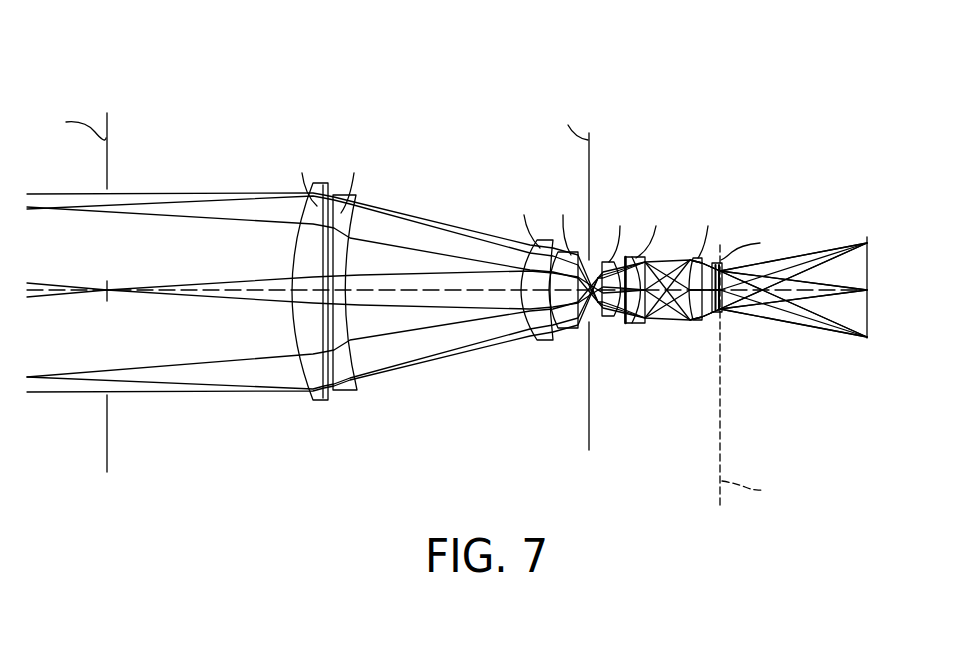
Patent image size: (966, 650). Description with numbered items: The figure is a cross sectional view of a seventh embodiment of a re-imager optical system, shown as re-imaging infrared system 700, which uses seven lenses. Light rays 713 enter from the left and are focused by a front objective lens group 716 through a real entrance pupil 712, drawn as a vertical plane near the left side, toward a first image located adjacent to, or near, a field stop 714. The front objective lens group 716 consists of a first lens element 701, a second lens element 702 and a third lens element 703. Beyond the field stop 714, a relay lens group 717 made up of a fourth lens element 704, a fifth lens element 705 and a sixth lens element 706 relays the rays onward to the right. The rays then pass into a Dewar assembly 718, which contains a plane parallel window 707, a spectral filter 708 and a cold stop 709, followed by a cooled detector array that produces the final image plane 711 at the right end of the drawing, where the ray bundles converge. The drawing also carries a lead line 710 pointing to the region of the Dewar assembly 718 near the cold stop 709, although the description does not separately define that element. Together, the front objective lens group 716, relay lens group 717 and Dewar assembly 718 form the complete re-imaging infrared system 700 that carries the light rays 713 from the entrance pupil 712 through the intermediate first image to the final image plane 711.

The re-imaging infrared system 700 is at (240, 80).
The lens element L1 701 is at (318, 376).
The lens element L2 702 is at (343, 368).
The lens element L3 703 is at (542, 325).
The lens element L4 704 is at (573, 327).
The lens element L5 705 is at (608, 322).
The lens element L6 706 is at (633, 317).
The plane parallel window 707 is at (697, 321).
The spectral filter 708 is at (712, 321).
The cold stop 709 is at (721, 312).
The exit pupil EXP 710 is at (721, 258).
The final image plane 711 is at (870, 318).
The real entrance pupil 712 is at (107, 450).
The light rays 713 is at (200, 298).
The field stop 714 is at (589, 417).
The front objective lens group 716 is at (368, 93).
The relay lens group 717 is at (522, 106).
The Dewar assembly 718 is at (705, 133).